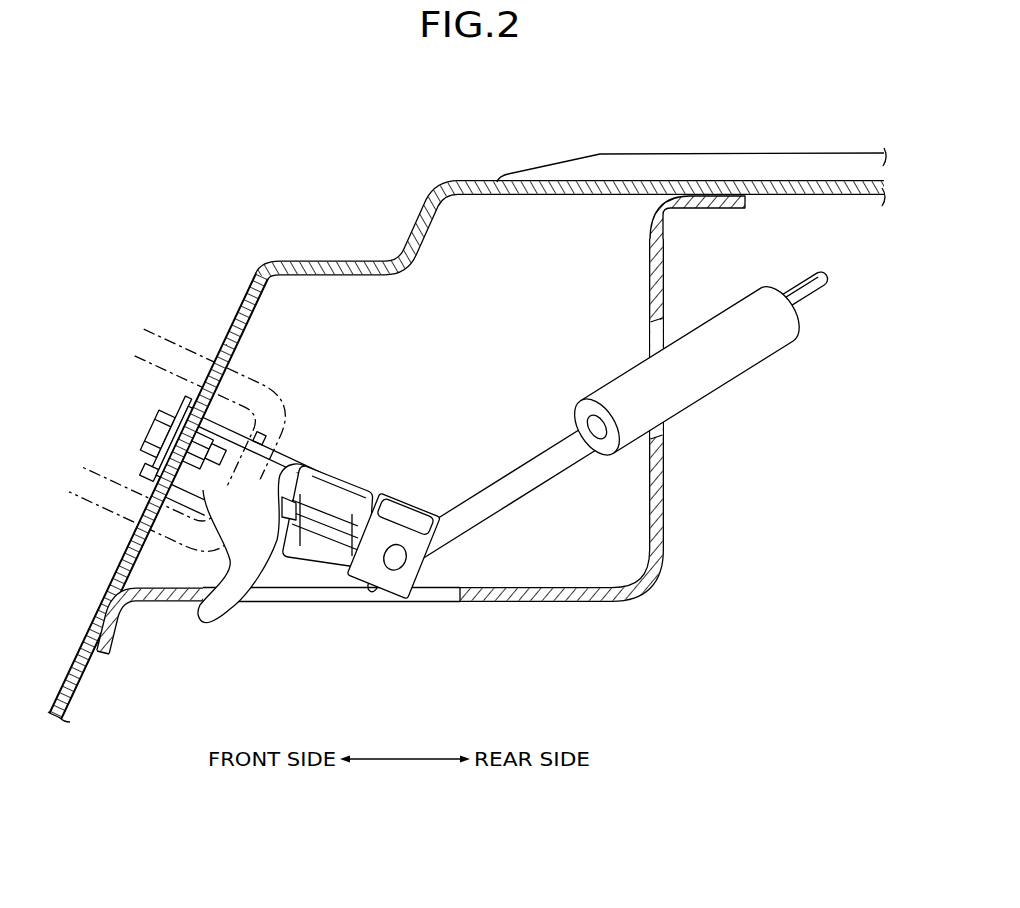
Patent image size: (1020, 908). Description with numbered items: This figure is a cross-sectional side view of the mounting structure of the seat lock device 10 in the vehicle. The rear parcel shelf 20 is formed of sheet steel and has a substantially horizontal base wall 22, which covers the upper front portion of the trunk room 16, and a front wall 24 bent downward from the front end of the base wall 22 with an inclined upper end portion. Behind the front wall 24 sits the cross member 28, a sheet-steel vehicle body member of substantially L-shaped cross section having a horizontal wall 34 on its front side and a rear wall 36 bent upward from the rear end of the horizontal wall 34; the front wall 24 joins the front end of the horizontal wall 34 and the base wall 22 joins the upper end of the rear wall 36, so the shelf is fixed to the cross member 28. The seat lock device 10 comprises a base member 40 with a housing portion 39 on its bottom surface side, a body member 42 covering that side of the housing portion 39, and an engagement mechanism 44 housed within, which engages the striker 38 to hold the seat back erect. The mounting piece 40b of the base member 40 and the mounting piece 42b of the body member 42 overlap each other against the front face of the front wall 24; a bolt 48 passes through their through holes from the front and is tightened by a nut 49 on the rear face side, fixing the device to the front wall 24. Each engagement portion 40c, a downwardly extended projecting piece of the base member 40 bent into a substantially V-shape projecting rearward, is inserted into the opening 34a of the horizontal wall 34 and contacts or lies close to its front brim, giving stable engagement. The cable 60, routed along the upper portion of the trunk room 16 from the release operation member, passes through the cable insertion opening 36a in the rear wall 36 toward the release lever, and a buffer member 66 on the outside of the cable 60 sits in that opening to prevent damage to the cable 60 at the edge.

The seat lock device 10 is at (352, 443).
The trunk room 16 is at (682, 677).
The rear parcel shelf 20 is at (690, 148).
The base wall 22 is at (766, 180).
The front wall 24 is at (240, 330).
The cross member 28 is at (676, 537).
The horizontal wall 34 is at (510, 602).
The opening 34a is at (450, 602).
The rear wall 36 is at (650, 243).
The cable insertion opening 36a is at (650, 326).
The striker 38 is at (250, 380).
The housing portion 39 is at (335, 488).
The base member 40 is at (283, 462).
The mounting piece 40b is at (186, 408).
The engagement portion 40c is at (222, 628).
The body member 42 is at (180, 503).
The mounting piece 42b is at (152, 460).
The engagement mechanism 44 is at (316, 537).
The bolt 48 is at (152, 425).
The nut 49 is at (194, 478).
The cable 60 is at (530, 480).
The buffer member 66 is at (708, 375).